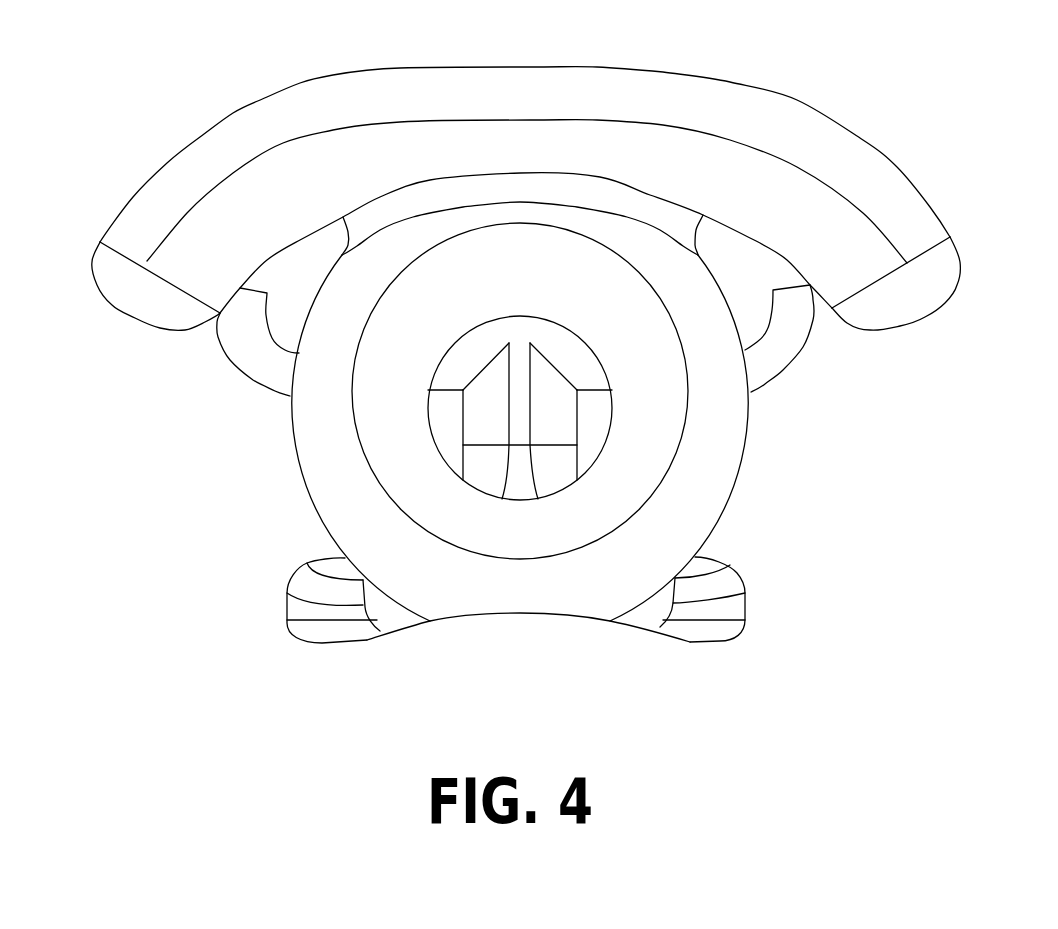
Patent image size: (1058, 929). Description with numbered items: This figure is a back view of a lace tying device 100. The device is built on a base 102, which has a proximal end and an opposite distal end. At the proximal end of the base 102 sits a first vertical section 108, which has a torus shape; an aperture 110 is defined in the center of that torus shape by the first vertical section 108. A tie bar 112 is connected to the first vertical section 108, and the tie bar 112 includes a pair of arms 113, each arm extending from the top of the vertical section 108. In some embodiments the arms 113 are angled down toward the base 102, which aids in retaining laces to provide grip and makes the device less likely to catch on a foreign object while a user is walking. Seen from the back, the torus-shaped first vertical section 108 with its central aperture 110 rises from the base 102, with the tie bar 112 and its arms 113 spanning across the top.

The lace tying device 100 is at (134, 90).
The base 102 is at (307, 610).
The first vertical section 108 is at (700, 417).
The aperture 110 is at (600, 457).
The tie bar 112 is at (573, 93).
The arms 113 is at (897, 293).